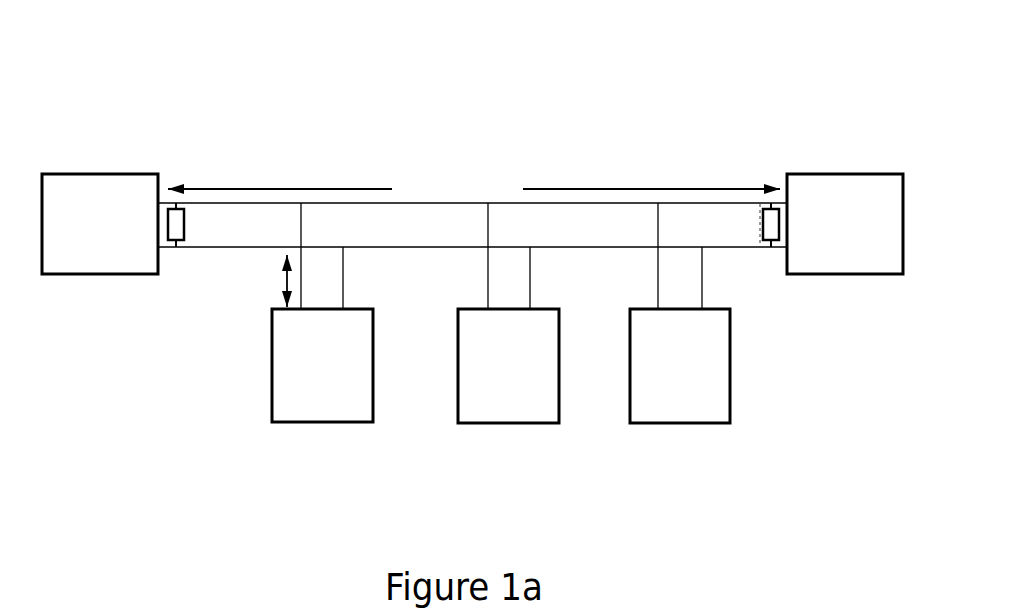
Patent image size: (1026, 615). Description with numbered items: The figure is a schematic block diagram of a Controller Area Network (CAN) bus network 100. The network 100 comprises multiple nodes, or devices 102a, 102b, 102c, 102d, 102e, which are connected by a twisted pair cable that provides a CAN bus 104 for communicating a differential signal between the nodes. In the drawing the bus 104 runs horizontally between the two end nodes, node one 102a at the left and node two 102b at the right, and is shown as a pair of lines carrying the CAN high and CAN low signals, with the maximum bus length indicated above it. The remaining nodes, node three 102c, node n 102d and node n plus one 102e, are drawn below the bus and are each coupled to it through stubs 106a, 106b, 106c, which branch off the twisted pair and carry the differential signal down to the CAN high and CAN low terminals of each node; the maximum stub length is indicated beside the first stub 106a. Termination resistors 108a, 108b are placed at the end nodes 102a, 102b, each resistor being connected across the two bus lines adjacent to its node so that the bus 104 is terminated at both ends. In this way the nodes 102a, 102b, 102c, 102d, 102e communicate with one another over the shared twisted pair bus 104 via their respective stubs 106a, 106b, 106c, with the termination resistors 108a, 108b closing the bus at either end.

The CAN bus network 100 is at (382, 107).
The node 102a is at (85, 278).
The node 102b is at (830, 278).
The node 102c is at (315, 435).
The node 102d is at (490, 437).
The node 102e is at (675, 428).
The CAN bus 104 is at (592, 197).
The stub 106a is at (328, 270).
The stub 106b is at (518, 270).
The stub 106c is at (690, 270).
The termination resistor 108a is at (205, 223).
The termination resistor 108b is at (742, 225).